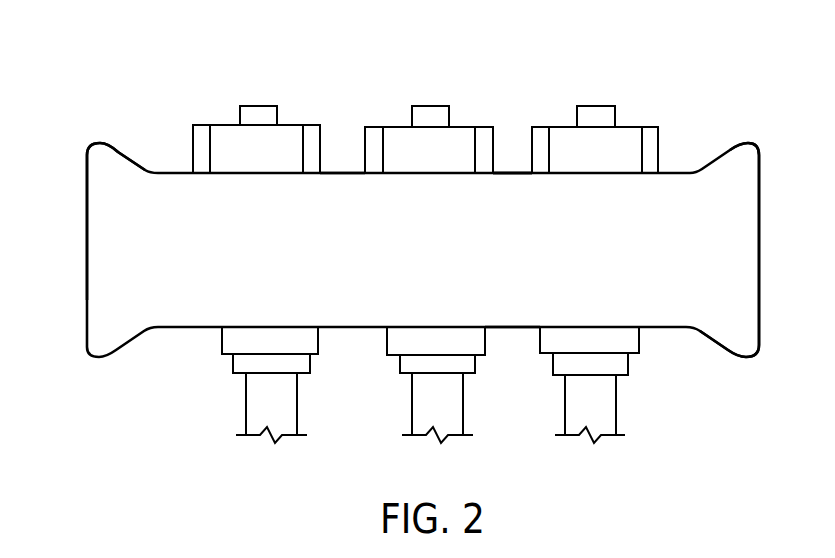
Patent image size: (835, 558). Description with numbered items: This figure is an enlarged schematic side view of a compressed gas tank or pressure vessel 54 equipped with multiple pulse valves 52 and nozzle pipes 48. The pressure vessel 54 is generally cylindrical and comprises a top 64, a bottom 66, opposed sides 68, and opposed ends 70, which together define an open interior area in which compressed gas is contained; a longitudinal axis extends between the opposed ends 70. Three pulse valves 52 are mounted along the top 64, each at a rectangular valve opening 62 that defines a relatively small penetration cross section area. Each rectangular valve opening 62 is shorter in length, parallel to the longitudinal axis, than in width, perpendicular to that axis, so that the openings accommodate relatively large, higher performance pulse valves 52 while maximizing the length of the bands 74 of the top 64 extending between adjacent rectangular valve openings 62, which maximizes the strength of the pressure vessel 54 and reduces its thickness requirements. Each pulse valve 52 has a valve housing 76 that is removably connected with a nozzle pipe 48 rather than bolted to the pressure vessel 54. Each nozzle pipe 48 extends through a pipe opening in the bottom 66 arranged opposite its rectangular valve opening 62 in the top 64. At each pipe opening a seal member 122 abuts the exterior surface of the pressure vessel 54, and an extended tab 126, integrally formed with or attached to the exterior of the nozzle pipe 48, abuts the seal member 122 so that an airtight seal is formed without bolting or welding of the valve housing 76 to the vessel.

The nozzle pipe 48 is at (297, 415).
The pulse valve 52 is at (296, 103).
The compressed gas tank or pressure vessel 54 is at (750, 245).
The rectangular valve opening 62 is at (263, 173).
The top 64 is at (517, 173).
The bottom 66 is at (522, 327).
The opposed sides 68 is at (717, 290).
The opposed ends 70 is at (86, 232).
The band 74 is at (343, 173).
The valve housing 76 is at (322, 150).
The seal member 122 is at (318, 343).
The extended tab 126 is at (310, 365).